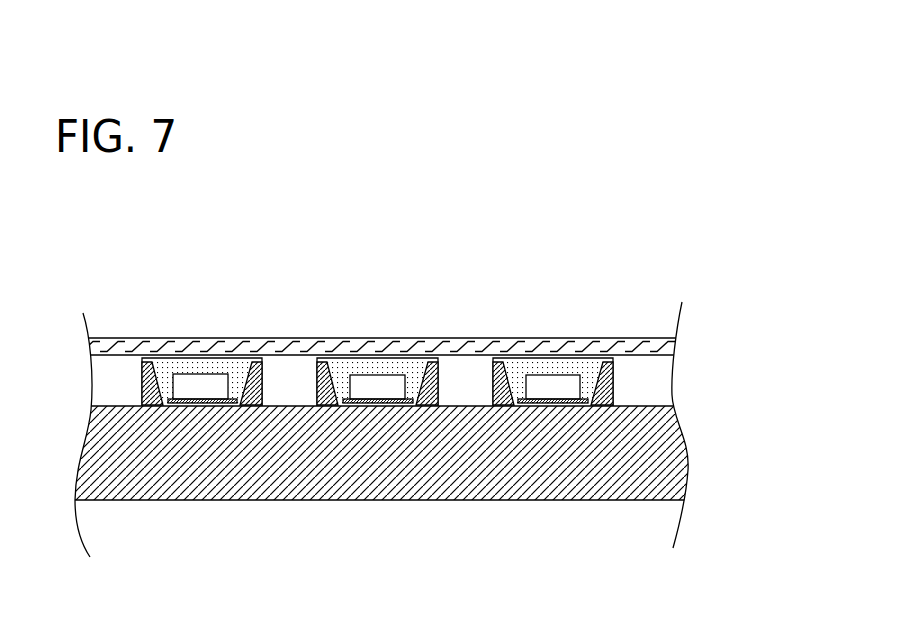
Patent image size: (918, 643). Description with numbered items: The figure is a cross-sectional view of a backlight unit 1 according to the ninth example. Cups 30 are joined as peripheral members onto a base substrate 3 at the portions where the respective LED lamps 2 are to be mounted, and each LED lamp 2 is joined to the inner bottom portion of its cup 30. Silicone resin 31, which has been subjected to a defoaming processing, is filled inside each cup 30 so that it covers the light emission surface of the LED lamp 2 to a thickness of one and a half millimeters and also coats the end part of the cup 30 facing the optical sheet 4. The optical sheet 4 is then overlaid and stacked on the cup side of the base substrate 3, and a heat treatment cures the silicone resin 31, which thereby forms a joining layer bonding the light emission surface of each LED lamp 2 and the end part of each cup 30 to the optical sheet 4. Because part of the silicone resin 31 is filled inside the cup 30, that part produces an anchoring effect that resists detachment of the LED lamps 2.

The backlight unit 1 is at (598, 292).
The LED lamp 2 is at (553, 386).
The base substrate 3 is at (500, 462).
The optical sheet 4 is at (662, 347).
The cup 30 is at (615, 388).
The silicone resin 31 is at (590, 367).